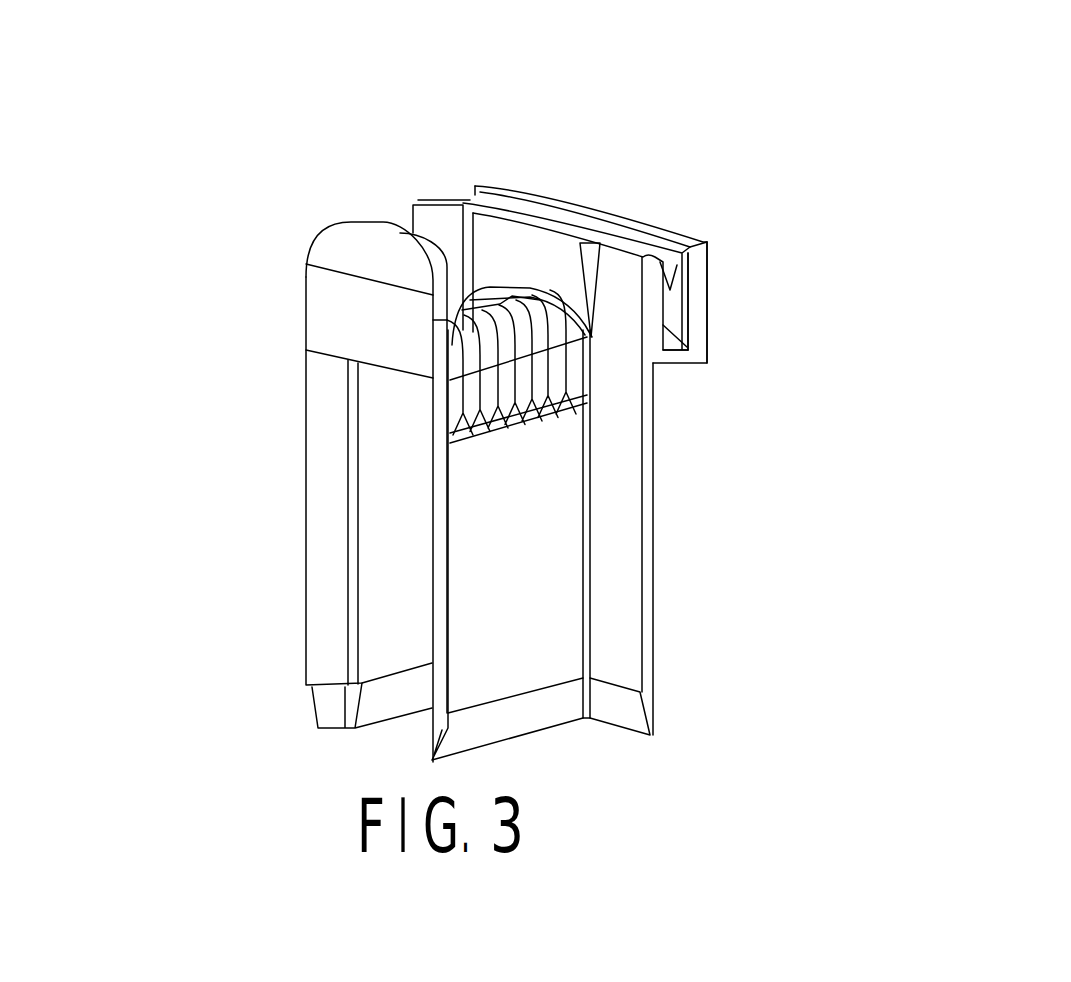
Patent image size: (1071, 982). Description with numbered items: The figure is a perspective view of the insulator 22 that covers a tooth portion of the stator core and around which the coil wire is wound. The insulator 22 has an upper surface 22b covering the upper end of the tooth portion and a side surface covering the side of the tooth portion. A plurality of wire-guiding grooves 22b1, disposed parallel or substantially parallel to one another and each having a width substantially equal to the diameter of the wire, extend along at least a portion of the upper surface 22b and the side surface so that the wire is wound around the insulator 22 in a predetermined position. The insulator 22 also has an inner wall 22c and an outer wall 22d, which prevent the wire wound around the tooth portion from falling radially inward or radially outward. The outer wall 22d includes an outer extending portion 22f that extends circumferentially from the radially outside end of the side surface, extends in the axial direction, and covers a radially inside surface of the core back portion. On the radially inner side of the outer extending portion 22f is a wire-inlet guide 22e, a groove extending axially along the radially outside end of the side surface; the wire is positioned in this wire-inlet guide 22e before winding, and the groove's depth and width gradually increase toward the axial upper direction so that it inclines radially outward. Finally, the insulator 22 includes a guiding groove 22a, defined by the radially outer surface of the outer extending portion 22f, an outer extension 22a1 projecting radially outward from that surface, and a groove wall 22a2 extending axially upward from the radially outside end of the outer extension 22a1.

The insulator 22 is at (115, 108).
The guiding groove 22a is at (670, 290).
The outer extension 22a1 is at (672, 358).
The groove wall 22a2 is at (698, 316).
The upper surface 22b is at (495, 283).
The wire-guiding grooves 22b1 is at (510, 283).
The inner wall 22c is at (377, 257).
The outer wall 22d is at (580, 237).
The wire-inlet guide 22e is at (605, 240).
The outer extending portion 22f is at (440, 223).